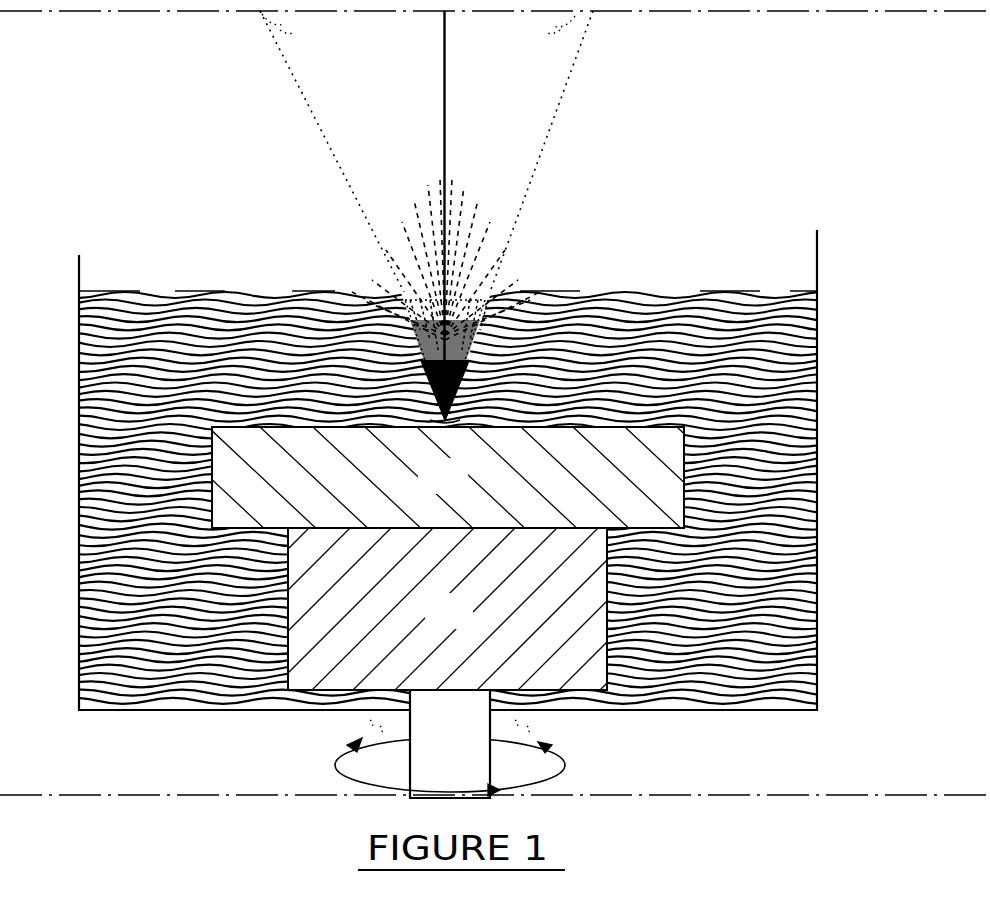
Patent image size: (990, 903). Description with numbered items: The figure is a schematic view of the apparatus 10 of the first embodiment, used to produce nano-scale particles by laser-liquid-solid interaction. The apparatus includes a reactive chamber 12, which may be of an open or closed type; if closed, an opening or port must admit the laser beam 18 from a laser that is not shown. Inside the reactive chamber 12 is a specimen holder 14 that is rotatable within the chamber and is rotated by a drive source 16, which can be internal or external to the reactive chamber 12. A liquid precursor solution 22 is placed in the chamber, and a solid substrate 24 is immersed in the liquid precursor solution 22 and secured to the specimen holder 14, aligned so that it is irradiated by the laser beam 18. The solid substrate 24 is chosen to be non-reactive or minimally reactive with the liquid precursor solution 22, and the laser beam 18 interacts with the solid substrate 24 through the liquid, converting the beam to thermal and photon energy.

The apparatus 10 is at (845, 245).
The reactive chamber 12 is at (820, 463).
The specimen holder 14 is at (445, 618).
The drive source 16 is at (495, 720).
The laser beam 18 is at (492, 157).
The liquid precursor solution 22 is at (615, 290).
The solid substrate 24 is at (455, 488).